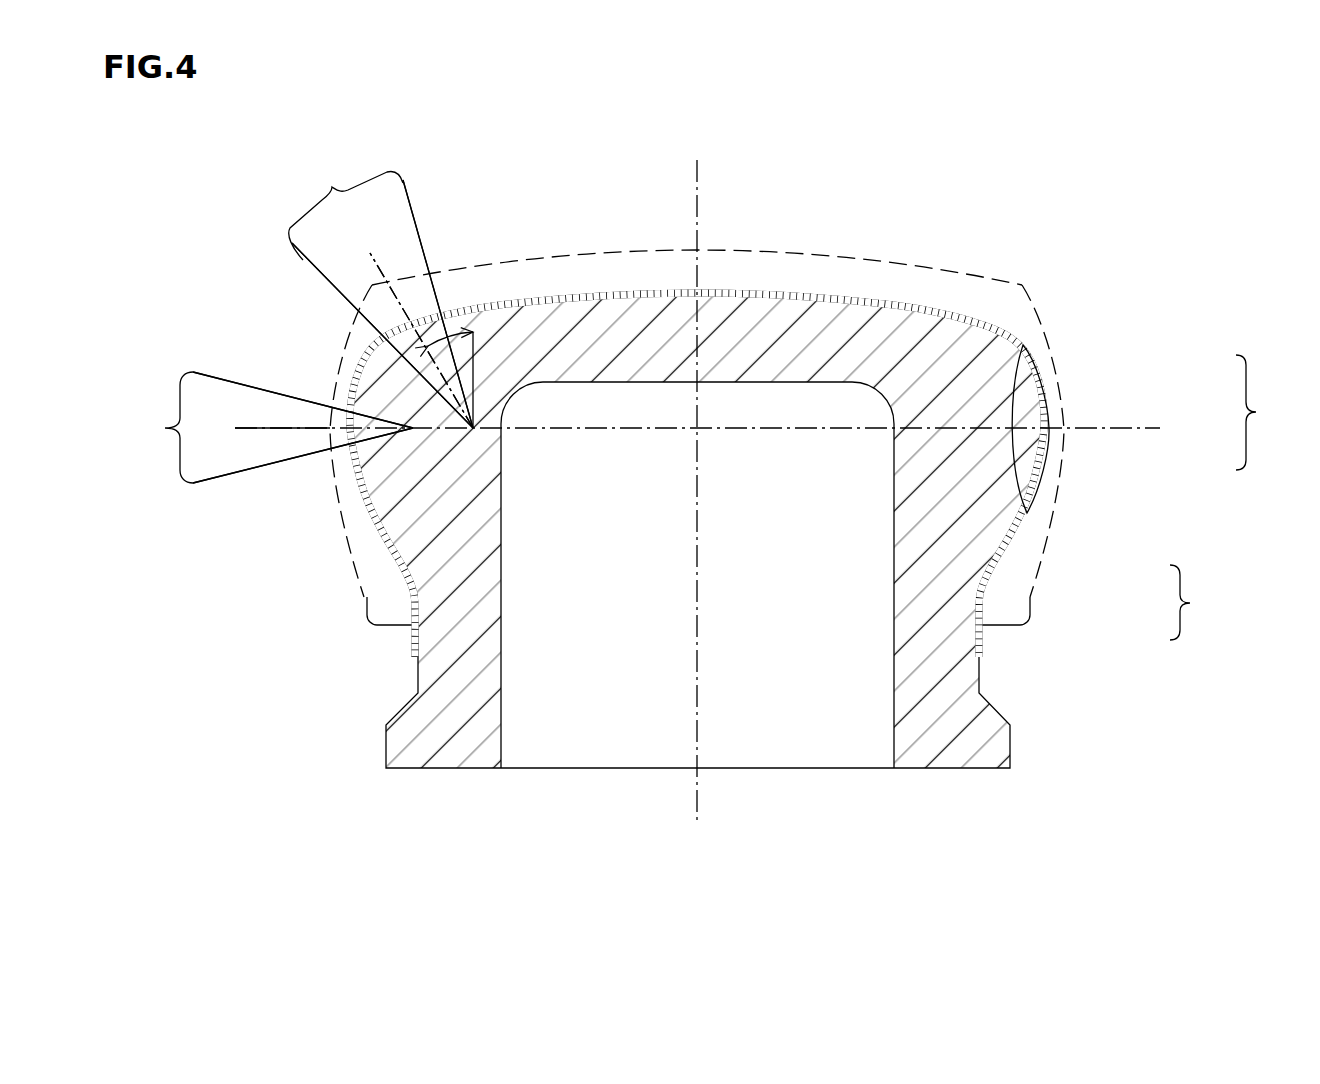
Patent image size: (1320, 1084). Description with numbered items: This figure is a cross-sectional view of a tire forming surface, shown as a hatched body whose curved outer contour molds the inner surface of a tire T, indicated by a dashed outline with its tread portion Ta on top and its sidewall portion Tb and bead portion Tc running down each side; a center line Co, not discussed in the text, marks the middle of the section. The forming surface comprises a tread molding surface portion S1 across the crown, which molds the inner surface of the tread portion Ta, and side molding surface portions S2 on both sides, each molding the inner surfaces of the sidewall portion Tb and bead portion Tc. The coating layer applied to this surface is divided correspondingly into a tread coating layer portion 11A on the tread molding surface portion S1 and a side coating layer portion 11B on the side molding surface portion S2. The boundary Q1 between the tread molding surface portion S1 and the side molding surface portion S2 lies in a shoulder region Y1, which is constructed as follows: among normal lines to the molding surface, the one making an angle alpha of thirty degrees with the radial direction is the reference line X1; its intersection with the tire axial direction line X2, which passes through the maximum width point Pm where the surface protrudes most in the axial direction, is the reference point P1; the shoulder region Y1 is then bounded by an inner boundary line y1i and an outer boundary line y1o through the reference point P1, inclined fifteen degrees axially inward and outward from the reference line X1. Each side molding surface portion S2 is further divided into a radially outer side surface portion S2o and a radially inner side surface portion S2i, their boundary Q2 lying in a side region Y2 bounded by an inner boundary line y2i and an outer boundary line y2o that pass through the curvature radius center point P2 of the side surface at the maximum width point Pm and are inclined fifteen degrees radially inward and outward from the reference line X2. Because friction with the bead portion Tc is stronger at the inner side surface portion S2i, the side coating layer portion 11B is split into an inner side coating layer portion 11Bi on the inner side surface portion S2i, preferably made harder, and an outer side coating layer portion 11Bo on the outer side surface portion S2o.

The tread coating layer portion 11A is at (760, 292).
The side coating layer portion 11B is at (1108, 611).
The outer side coating layer portion 11Bo is at (348, 380).
The inner side coating layer portion 11Bi is at (367, 582).
The tread molding surface portion S1 is at (590, 298).
The side molding surface portion S2 is at (1167, 412).
The outer side surface portion S2o is at (372, 330).
The inner side surface portion S2i is at (353, 522).
The center axis Co is at (697, 477).
The tire T is at (875, 248).
The tread portion Ta is at (838, 245).
The sidewall portion Tb is at (1055, 305).
The bead portion Tc is at (1031, 598).
The reference point P1 is at (476, 440).
The curvature radius center point P2 is at (418, 437).
The maximum width point Pm is at (340, 437).
The boundary Q1 is at (397, 327).
The boundary Q2 is at (340, 420).
The reference line X1 is at (418, 232).
The reference line X2 is at (262, 432).
The shoulder region Y1 is at (346, 208).
The outer boundary line y1o is at (298, 262).
The inner boundary line y1i is at (410, 193).
The side region Y2 is at (158, 427).
The outer boundary line y2o is at (196, 375).
The inner boundary line y2i is at (196, 482).
The angle alpha is at (458, 343).